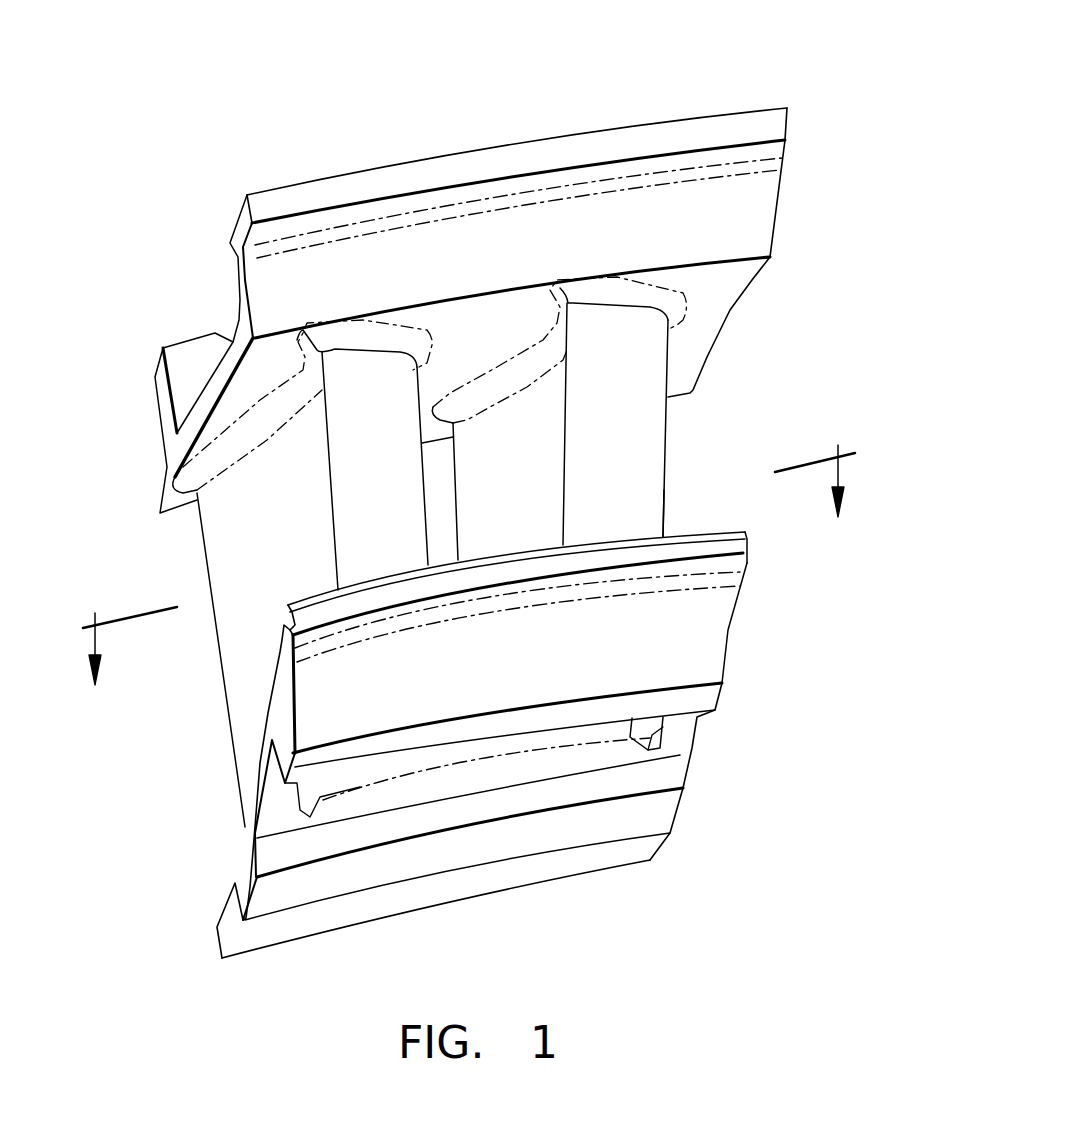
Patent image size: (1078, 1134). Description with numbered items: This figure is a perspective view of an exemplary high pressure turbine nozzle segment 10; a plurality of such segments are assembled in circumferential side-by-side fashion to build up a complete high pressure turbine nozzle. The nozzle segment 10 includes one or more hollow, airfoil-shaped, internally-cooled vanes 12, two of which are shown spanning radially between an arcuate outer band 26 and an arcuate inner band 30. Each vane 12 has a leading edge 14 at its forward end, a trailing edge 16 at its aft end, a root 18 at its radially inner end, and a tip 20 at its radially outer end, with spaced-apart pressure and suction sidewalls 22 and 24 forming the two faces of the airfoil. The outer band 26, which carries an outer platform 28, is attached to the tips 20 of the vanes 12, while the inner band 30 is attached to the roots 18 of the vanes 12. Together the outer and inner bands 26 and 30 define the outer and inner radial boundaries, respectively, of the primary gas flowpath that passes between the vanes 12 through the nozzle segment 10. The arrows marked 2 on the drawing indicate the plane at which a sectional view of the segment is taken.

The nozzle segment 10 is at (657, 63).
The vane 12 is at (678, 431).
The leading edge 14 is at (582, 448).
The trailing edge 16 is at (232, 727).
The root 18 is at (665, 537).
The tip 20 is at (645, 317).
The pressure sidewall 22 is at (480, 502).
The suction sidewall 24 is at (665, 492).
The outer band 26 is at (750, 207).
The outer platform 28 is at (727, 275).
The inner band 30 is at (705, 637).
The section line 2- 2 is at (469, 575).